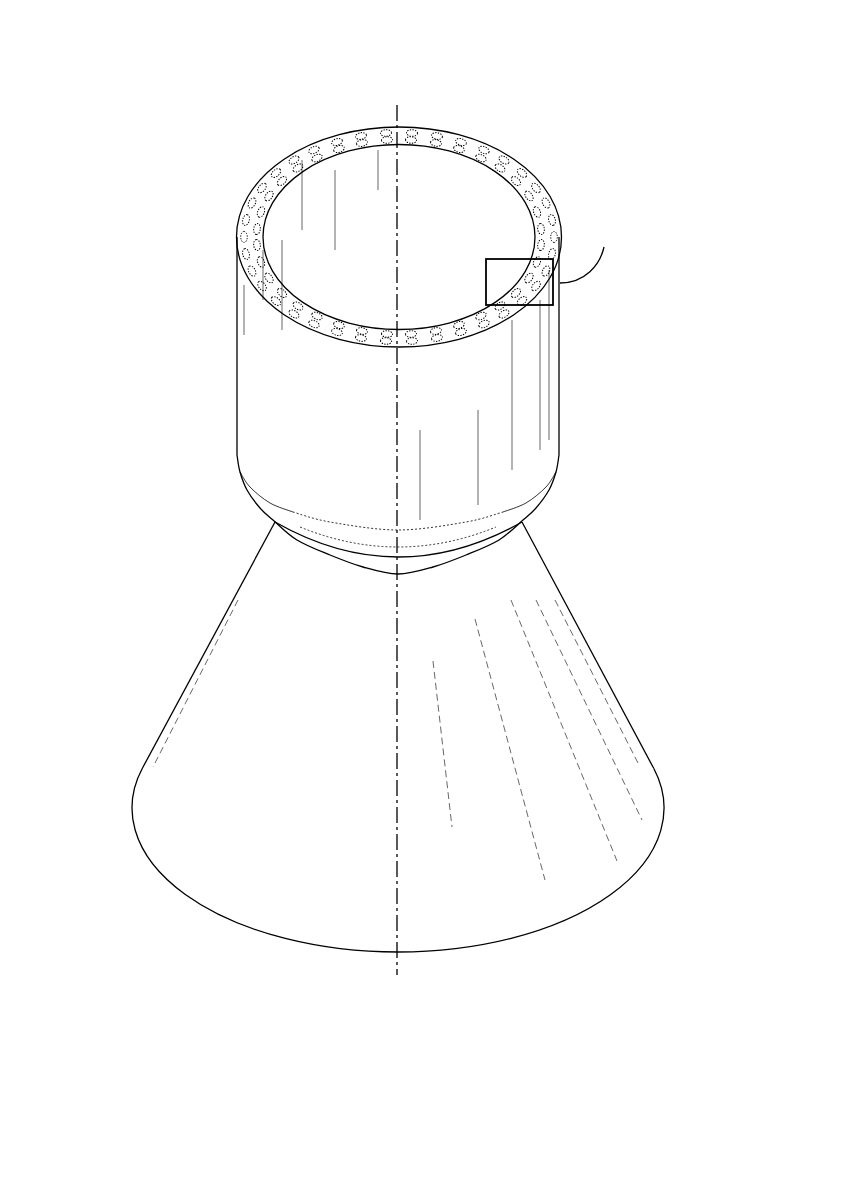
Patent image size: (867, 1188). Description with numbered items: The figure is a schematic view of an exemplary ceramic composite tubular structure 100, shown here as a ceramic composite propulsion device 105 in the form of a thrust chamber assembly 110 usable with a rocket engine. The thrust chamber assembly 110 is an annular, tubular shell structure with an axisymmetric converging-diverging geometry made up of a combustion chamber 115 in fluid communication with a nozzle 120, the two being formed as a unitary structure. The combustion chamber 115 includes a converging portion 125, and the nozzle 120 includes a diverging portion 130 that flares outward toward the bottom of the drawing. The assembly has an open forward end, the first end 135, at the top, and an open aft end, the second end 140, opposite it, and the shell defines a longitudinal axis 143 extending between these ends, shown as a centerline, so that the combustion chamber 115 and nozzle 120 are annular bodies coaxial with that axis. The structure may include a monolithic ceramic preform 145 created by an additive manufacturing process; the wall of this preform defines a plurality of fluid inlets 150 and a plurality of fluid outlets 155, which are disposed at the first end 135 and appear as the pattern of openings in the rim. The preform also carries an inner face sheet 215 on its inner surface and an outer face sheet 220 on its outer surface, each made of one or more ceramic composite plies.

The ceramic composite tubular structure 100 is at (705, 186).
The ceramic composite propulsion device 105 is at (158, 72).
The thrust chamber assembly 110 is at (666, 349).
The combustion chamber 115 is at (587, 412).
The nozzle 120 is at (667, 642).
The converging portion 125 is at (562, 514).
The diverging portion 130 is at (653, 717).
The first end 135 is at (225, 227).
The second end 140 is at (147, 865).
The longitudinal axis 143 is at (400, 197).
The monolithic ceramic preform 145 is at (525, 172).
The fluid inlets 150 is at (242, 258).
The fluid outlets 155 is at (278, 290).
The inner face sheet 215 is at (293, 162).
The outer face sheet 220 is at (243, 210).